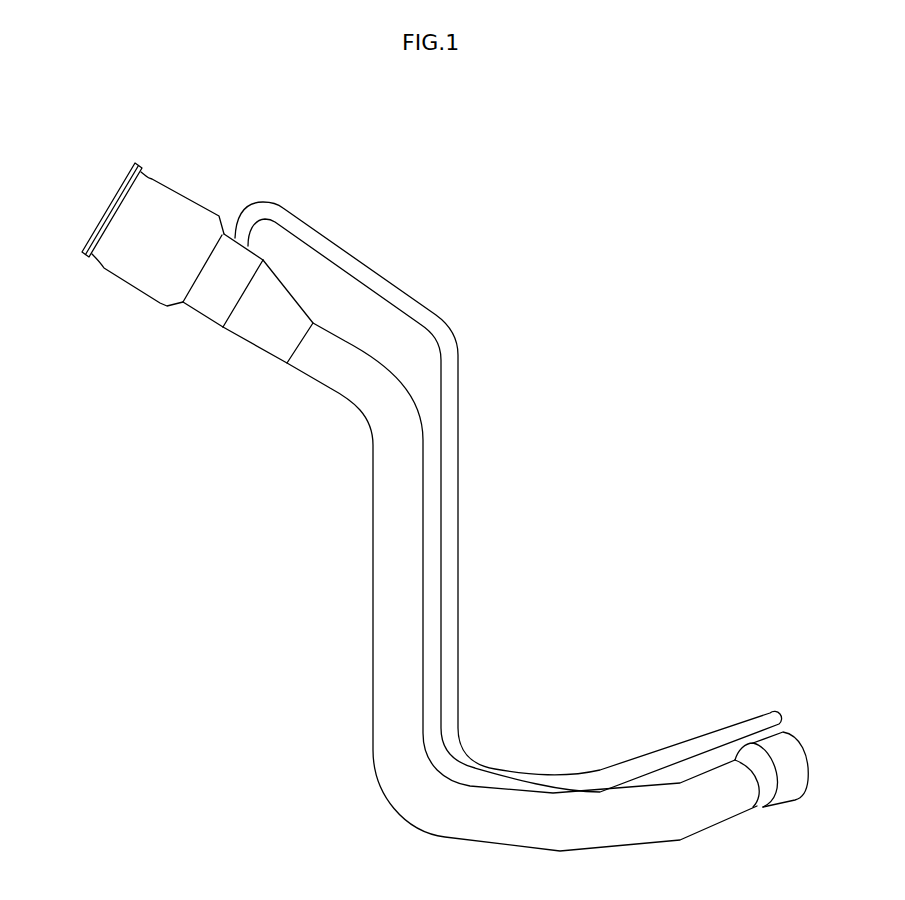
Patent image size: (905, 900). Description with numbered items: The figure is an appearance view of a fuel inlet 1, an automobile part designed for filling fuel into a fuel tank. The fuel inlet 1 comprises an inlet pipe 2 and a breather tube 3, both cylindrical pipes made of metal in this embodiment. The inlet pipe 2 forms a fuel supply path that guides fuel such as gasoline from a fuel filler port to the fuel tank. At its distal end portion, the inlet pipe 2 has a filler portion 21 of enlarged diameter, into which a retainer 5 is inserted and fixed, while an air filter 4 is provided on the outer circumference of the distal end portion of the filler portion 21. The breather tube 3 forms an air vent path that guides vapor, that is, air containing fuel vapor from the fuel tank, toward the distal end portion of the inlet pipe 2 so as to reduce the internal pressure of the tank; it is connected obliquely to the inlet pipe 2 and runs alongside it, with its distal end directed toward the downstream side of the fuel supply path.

The fuel inlet 1 is at (582, 350).
The inlet pipe 2 is at (363, 526).
The breather tube 3 is at (434, 308).
The air filter 4 is at (183, 217).
The retainer 5 is at (100, 202).
The filler portion 21 is at (243, 263).